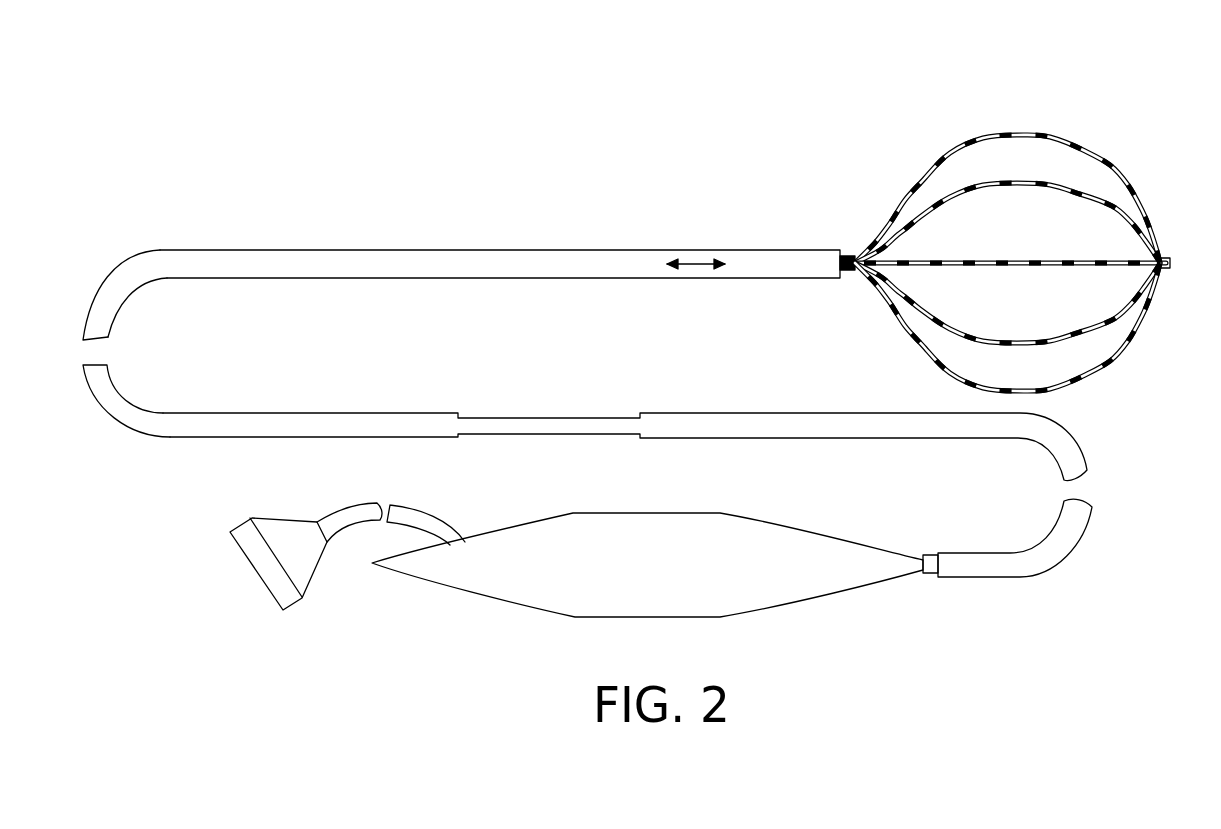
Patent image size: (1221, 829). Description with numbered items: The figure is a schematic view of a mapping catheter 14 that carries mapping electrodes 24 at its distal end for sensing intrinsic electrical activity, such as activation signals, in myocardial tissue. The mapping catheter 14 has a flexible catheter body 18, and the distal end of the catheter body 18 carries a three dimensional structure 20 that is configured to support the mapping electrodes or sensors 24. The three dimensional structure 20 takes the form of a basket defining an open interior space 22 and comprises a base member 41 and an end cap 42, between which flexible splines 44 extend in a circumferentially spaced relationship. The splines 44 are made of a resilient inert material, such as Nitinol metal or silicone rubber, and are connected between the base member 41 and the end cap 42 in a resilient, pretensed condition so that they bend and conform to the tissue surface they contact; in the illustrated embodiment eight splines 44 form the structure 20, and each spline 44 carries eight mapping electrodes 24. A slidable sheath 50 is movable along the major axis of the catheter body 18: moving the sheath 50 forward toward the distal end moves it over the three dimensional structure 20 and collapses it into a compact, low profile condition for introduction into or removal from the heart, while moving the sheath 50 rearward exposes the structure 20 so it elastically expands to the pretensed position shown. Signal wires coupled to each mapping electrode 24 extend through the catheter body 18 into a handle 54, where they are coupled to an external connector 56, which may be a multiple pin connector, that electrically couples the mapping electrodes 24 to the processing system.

The mapping catheter 14 is at (558, 152).
The catheter body 18 is at (850, 250).
The three dimensional structure 20 is at (1163, 156).
The open interior space 22 is at (1058, 312).
The mapping electrodes 24 is at (1108, 152).
The base member 41 is at (855, 275).
The end cap 42 is at (1170, 262).
The flexible splines 44 is at (935, 165).
The slidable sheath 50 is at (705, 250).
The handle 54 is at (810, 532).
The external connector 56 is at (250, 520).